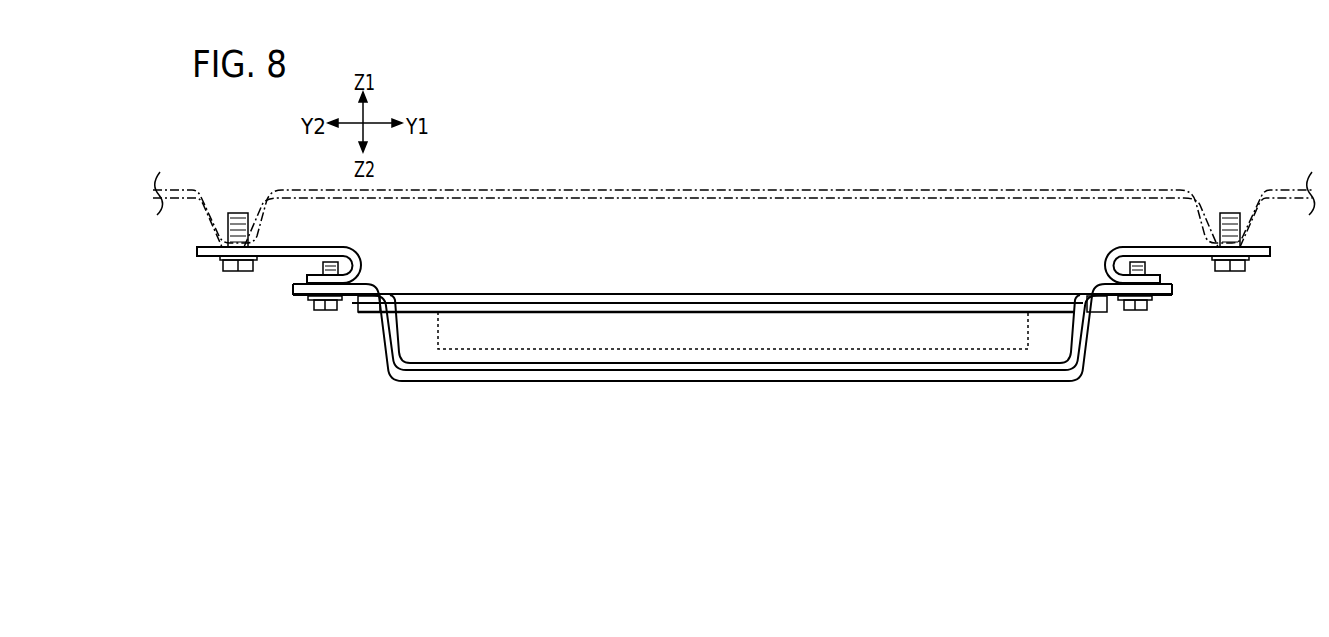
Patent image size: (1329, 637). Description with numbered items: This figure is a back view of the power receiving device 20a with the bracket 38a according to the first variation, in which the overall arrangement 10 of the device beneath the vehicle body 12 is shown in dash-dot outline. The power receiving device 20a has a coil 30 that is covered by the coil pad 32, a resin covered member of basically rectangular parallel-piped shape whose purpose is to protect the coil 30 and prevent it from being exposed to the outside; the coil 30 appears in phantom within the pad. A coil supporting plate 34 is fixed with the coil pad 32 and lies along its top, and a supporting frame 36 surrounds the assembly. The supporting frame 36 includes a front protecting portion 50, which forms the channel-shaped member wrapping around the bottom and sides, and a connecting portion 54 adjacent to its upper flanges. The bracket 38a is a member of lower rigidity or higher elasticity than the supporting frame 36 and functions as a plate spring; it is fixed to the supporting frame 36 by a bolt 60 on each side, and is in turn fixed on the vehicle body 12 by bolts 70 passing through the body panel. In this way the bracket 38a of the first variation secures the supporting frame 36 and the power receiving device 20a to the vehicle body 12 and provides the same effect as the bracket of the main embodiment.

The battery pack / vehicle structure 10 is at (1038, 121).
The vehicle body 12 is at (965, 200).
The power receiving device 20a is at (732, 358).
The coil 30 is at (572, 349).
The coil pad 32 is at (716, 352).
The coil supporting plate 34 is at (652, 292).
The supporting frame 36 is at (805, 382).
The bracket 38a is at (207, 256).
The front protecting portion 50 is at (905, 373).
The connecting portion 54 is at (352, 298).
The bolt 60 is at (325, 309).
The bolts 70 is at (232, 266).